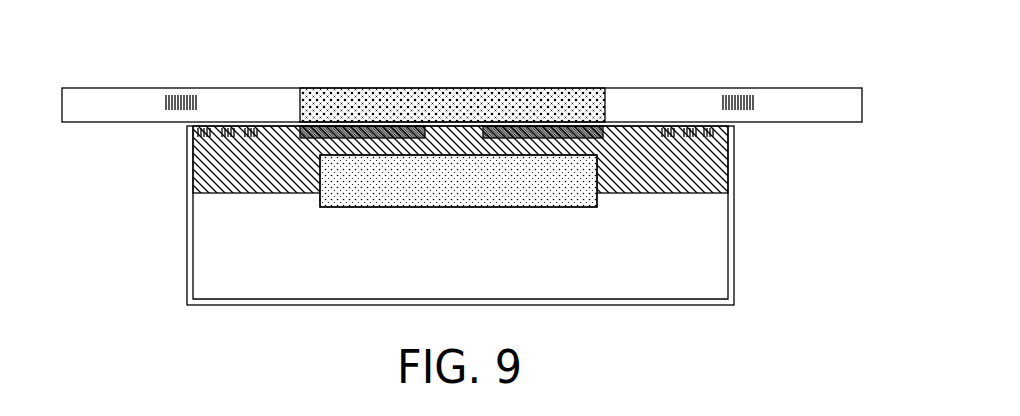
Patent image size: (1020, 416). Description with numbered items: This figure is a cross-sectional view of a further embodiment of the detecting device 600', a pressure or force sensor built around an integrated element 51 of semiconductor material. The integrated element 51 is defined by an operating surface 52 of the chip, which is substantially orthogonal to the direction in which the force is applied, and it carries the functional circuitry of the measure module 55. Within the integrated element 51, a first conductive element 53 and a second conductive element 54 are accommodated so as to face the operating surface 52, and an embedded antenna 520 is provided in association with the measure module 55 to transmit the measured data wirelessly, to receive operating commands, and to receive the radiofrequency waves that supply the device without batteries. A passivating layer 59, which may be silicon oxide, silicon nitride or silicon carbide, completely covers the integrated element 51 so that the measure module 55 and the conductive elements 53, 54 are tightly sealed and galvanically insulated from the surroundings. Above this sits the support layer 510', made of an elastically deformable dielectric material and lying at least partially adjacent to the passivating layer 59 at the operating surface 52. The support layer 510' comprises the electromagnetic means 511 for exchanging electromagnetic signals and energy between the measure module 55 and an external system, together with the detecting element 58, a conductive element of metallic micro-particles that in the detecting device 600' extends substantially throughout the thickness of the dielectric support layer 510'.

The detecting device 600' is at (60, 299).
The support layer 510' is at (462, 70).
The electromagnetic means 511 is at (173, 89).
The detecting element 58 is at (500, 103).
The integrated element 51 is at (710, 254).
The passivating layer 59 is at (635, 305).
The operating surface 52 is at (628, 128).
The first conductive element 53 is at (303, 137).
The second conductive element 54 is at (593, 121).
The embedded antenna 520 is at (728, 142).
The measure module 55 is at (392, 173).